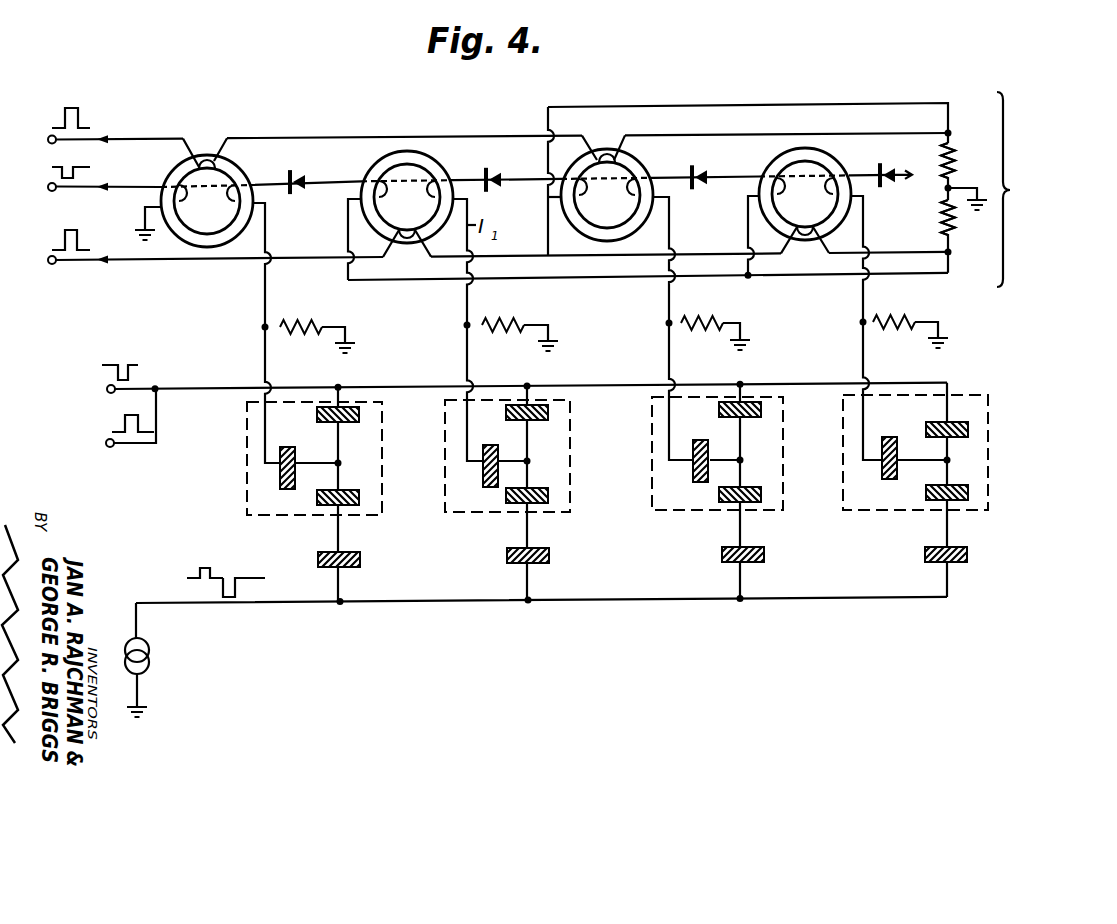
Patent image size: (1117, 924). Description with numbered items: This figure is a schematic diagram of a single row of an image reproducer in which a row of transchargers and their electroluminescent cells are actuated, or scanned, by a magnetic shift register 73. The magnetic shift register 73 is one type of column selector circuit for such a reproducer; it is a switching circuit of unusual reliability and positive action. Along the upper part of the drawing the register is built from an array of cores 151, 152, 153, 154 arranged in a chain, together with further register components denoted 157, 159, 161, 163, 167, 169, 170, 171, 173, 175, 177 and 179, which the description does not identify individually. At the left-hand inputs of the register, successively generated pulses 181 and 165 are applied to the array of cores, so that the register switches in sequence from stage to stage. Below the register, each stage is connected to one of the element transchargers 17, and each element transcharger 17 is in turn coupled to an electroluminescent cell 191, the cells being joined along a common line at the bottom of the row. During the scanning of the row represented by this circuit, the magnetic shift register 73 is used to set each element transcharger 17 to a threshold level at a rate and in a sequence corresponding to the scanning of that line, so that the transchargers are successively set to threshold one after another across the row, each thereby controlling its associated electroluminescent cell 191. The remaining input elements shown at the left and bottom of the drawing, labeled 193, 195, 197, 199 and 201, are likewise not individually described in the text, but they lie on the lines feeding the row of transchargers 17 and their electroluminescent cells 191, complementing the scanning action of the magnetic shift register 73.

The element transcharger 17 is at (583, 467).
The magnetic shift register 73 is at (1057, 189).
The magnetic core 151 is at (210, 153).
The magnetic core 152 is at (408, 157).
The magnetic core 153 is at (596, 152).
The magnetic core 154 is at (826, 130).
The input winding 157 is at (197, 166).
The resistor 159 is at (960, 160).
The input line 161 is at (212, 272).
The resistor 163 is at (958, 227).
The successively generated pulse 165 is at (65, 233).
The winding 167 is at (427, 180).
The diode 169 is at (497, 172).
The resistor 170 is at (296, 318).
The winding 171 is at (574, 205).
The diode 173 is at (329, 150).
The pulse input 175 is at (80, 166).
The winding 177 is at (633, 188).
The diode 179 is at (700, 177).
The successively generated pulse 181 is at (70, 96).
The electroluminescent cell 191 is at (550, 557).
The clear pulse input 193 is at (140, 422).
The video line 195 is at (198, 388).
The video pulse 197 is at (138, 363).
The light energizing pulse 199 is at (203, 573).
The light energizing pulse 201 is at (265, 588).